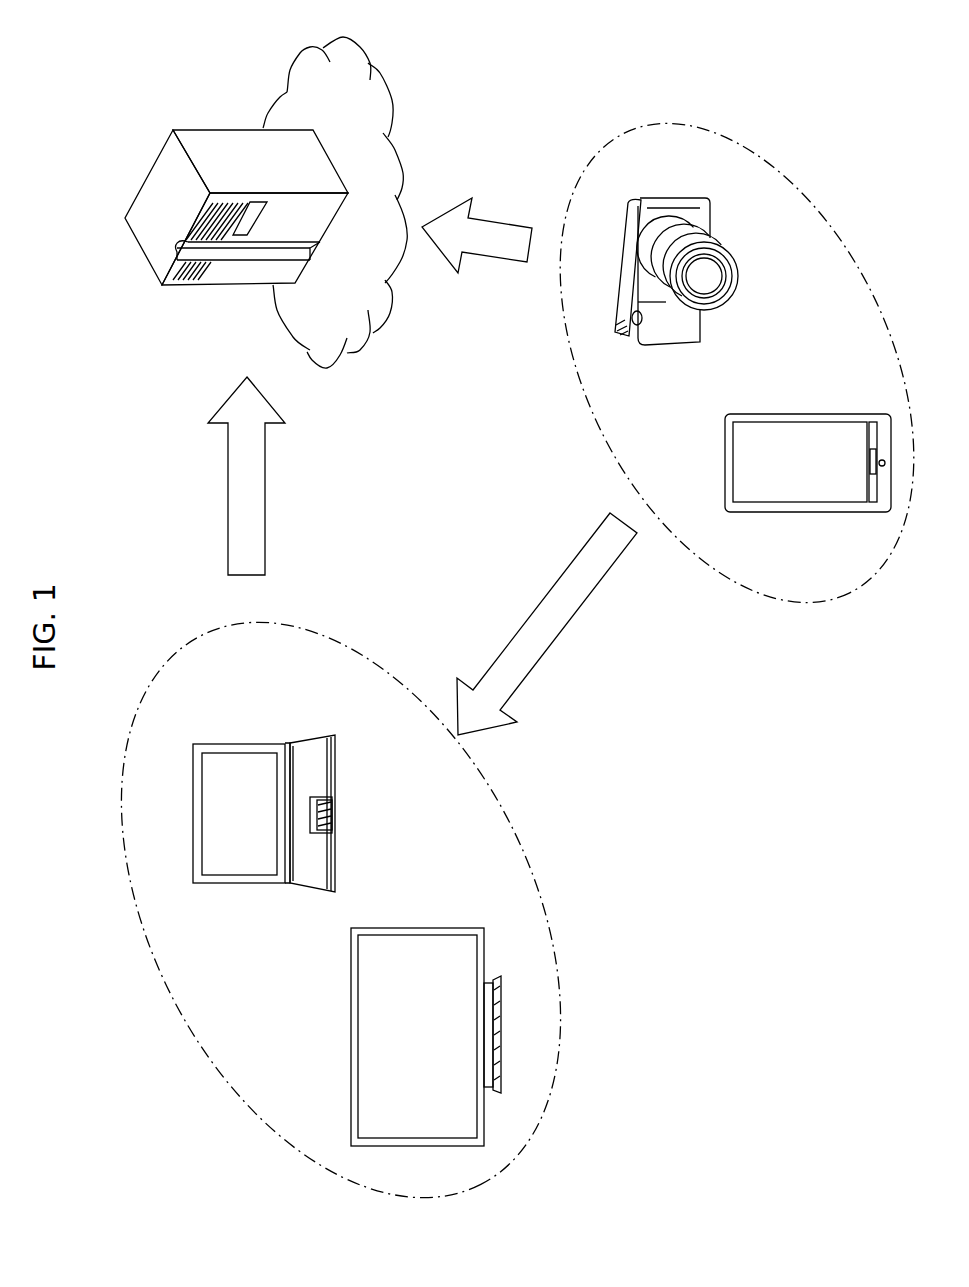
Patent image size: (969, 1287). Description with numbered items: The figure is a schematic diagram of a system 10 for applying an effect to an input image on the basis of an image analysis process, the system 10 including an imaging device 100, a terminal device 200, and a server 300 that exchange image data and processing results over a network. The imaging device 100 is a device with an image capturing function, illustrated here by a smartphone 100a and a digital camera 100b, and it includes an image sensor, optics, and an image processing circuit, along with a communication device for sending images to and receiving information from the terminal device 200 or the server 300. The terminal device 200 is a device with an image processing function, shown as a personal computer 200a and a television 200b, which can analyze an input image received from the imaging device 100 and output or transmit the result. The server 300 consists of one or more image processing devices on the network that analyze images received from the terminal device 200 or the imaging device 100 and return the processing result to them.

The system 10 is at (431, 526).
The imaging device 100 is at (598, 153).
The smartphone 100a is at (723, 484).
The digital camera 100b is at (614, 276).
The terminal device 200 is at (208, 1066).
The personal computer 200a is at (192, 806).
The television 200b is at (351, 1061).
The server 300 is at (202, 128).